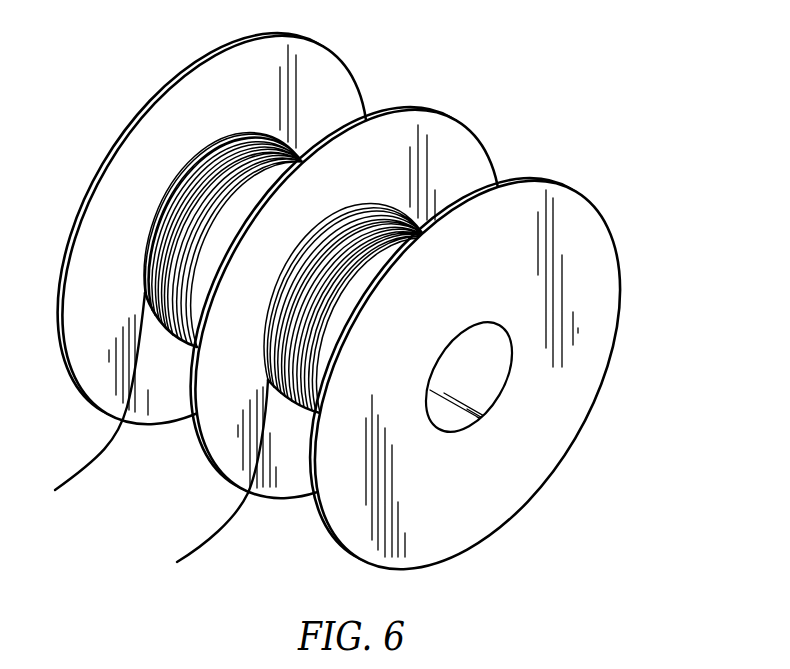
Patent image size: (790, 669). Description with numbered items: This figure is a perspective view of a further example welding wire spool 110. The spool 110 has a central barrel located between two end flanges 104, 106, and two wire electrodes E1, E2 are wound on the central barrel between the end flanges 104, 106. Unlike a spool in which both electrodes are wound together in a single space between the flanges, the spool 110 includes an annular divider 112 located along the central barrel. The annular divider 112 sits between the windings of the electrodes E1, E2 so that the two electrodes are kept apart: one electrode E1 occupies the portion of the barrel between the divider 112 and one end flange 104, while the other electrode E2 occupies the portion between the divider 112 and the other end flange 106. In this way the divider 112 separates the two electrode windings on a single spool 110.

The end flange 104 is at (617, 262).
The end flange 106 is at (338, 58).
The annular divider 112 is at (467, 133).
The spool 110 is at (352, 311).
The electrode E1 is at (208, 536).
The electrode E2 is at (88, 465).